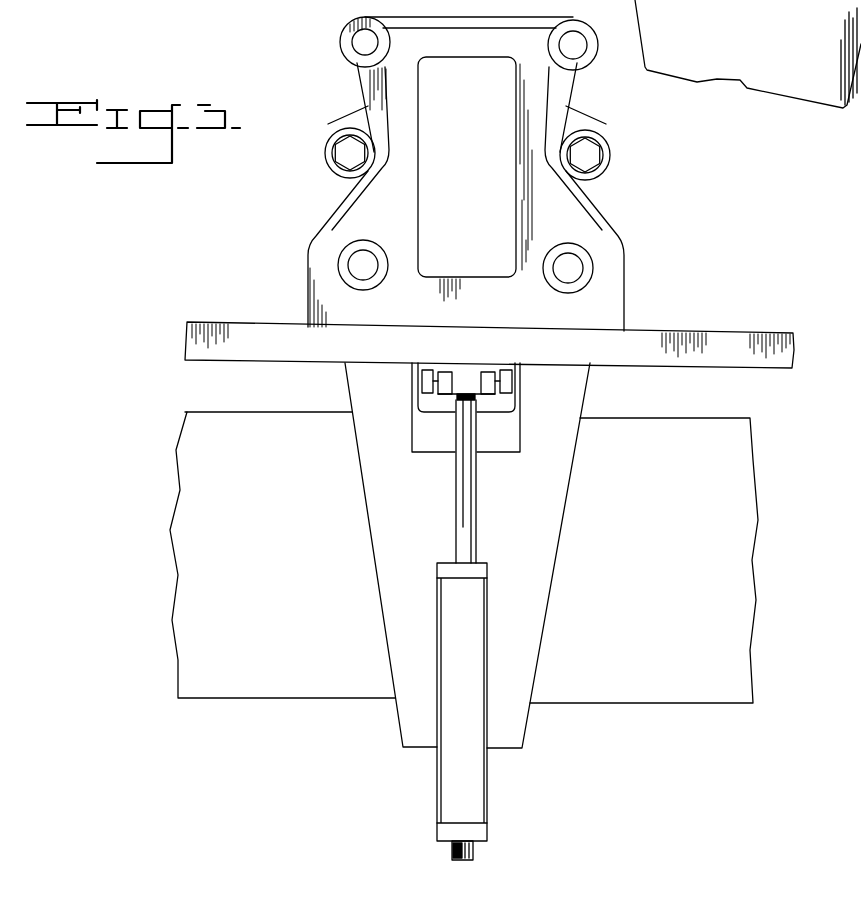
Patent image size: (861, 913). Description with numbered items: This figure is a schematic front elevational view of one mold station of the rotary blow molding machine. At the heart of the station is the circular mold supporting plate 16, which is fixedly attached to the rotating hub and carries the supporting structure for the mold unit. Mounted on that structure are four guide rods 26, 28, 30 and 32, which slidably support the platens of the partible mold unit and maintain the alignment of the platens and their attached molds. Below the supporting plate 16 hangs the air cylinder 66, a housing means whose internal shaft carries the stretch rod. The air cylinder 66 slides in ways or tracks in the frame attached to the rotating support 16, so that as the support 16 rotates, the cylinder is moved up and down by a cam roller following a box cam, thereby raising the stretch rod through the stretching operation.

The mold supporting plate 16 is at (752, 330).
The guide rod 26 is at (356, 44).
The guide rod 28 is at (350, 263).
The guide rod 30 is at (574, 51).
The guide rod 32 is at (575, 262).
The air cylinder 66 is at (443, 791).